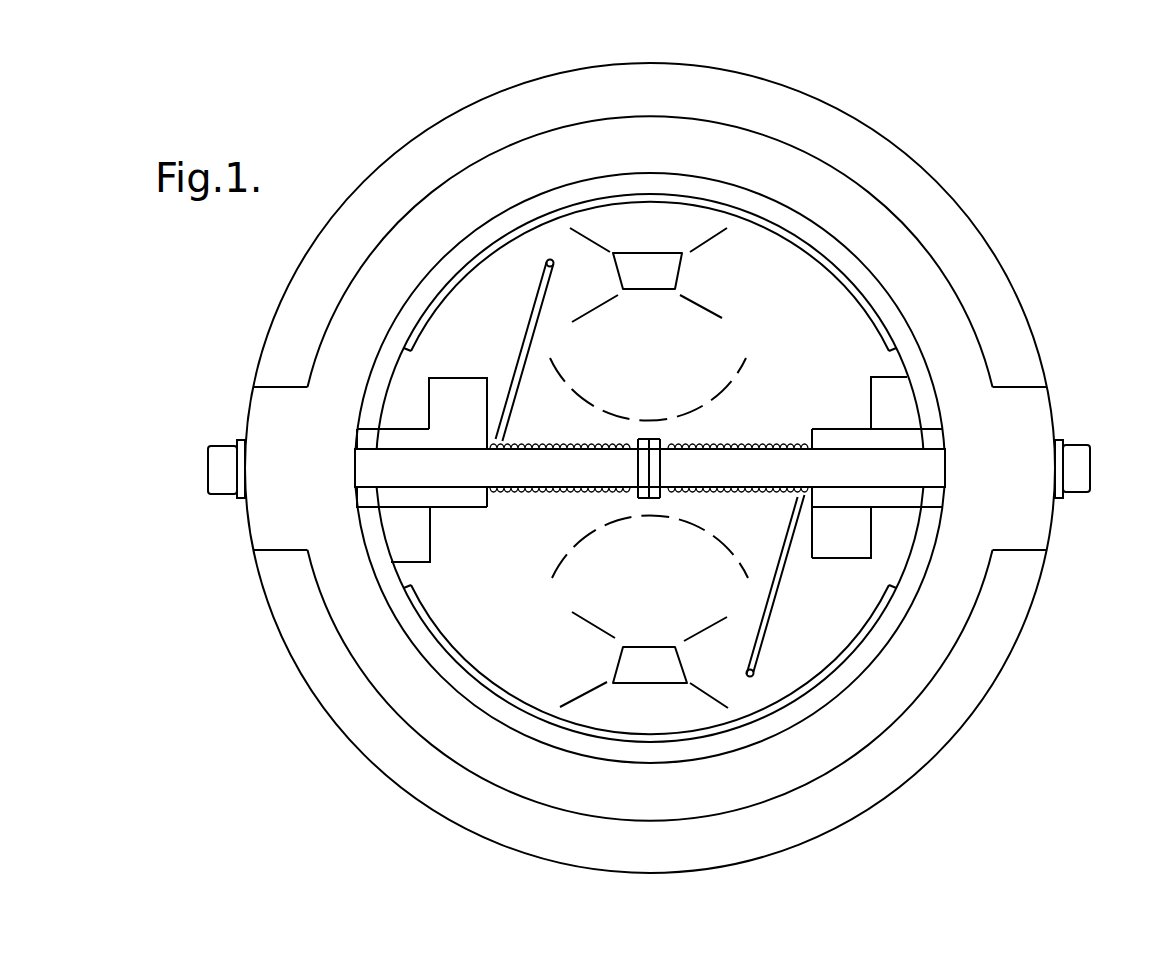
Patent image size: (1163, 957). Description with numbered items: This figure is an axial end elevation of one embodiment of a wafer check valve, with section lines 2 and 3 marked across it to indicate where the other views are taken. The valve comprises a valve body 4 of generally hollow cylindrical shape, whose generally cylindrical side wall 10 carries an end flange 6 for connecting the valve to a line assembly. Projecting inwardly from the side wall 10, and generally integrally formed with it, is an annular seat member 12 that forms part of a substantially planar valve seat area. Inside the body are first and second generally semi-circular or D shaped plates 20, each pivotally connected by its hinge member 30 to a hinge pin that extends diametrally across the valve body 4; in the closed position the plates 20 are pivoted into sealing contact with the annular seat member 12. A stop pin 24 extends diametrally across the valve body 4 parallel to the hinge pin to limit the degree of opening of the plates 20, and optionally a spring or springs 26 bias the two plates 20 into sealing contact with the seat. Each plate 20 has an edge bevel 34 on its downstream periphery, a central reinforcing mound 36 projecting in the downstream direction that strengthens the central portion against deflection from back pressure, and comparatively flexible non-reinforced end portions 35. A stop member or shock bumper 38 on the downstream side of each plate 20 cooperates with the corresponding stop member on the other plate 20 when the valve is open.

The section line 2- 2 is at (668, 32).
The section line 3- 3 is at (195, 462).
The valve body 4 is at (940, 178).
The end flange 6 is at (1015, 585).
The side wall 10 is at (937, 640).
The annular seat member 12 is at (920, 372).
The semi-circular plate 20 is at (650, 468).
The stop pin 24 is at (672, 492).
The spring 26 is at (705, 438).
The hinge member 30 is at (833, 432).
The edge bevel 34 is at (782, 236).
The non-reinforced end portion 35 is at (649, 477).
The mound 36 is at (649, 476).
The stop member or shock bumper 38 is at (645, 262).